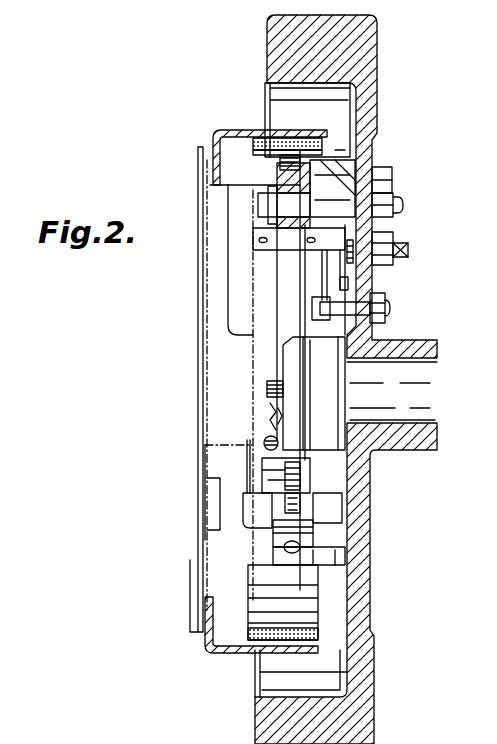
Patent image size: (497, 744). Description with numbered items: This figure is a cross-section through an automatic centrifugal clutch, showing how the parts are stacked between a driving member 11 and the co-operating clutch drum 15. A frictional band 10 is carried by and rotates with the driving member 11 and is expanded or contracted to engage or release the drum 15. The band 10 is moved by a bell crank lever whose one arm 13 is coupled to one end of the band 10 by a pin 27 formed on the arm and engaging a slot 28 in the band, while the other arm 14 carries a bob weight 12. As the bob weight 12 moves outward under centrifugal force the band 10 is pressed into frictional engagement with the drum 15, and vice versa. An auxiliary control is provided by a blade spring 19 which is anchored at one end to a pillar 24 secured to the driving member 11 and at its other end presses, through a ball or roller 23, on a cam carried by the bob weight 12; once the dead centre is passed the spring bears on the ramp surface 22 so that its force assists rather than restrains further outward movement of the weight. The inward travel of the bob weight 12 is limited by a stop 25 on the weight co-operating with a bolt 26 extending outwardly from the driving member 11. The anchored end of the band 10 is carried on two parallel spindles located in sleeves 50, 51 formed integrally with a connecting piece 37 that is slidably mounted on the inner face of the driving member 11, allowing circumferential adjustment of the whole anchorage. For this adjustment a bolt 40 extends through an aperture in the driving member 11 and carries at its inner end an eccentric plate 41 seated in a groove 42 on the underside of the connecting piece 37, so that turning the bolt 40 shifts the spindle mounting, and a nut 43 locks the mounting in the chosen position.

The frictional band 10 is at (340, 133).
The driving member 11 is at (368, 93).
The bob weight 12 is at (272, 473).
The arm of bell crank lever 13 is at (253, 173).
The arm of bell crank lever 14 is at (302, 300).
The clutch drum 15 is at (216, 131).
The blade spring 19 is at (262, 520).
The ramp surface 22 is at (283, 515).
The ball or roller 23 is at (287, 497).
The pillar 24 is at (328, 558).
The stop 25 is at (268, 416).
The bolt 26 is at (270, 385).
The pin 27 is at (262, 140).
The slot 28 is at (288, 140).
The connecting piece 37 is at (403, 210).
The bolt 40 is at (406, 256).
The eccentric plate 41 is at (372, 278).
The groove 42 is at (372, 268).
The nut 43 is at (393, 233).
The sleeve 50 is at (340, 181).
The sleeve 51 is at (312, 312).